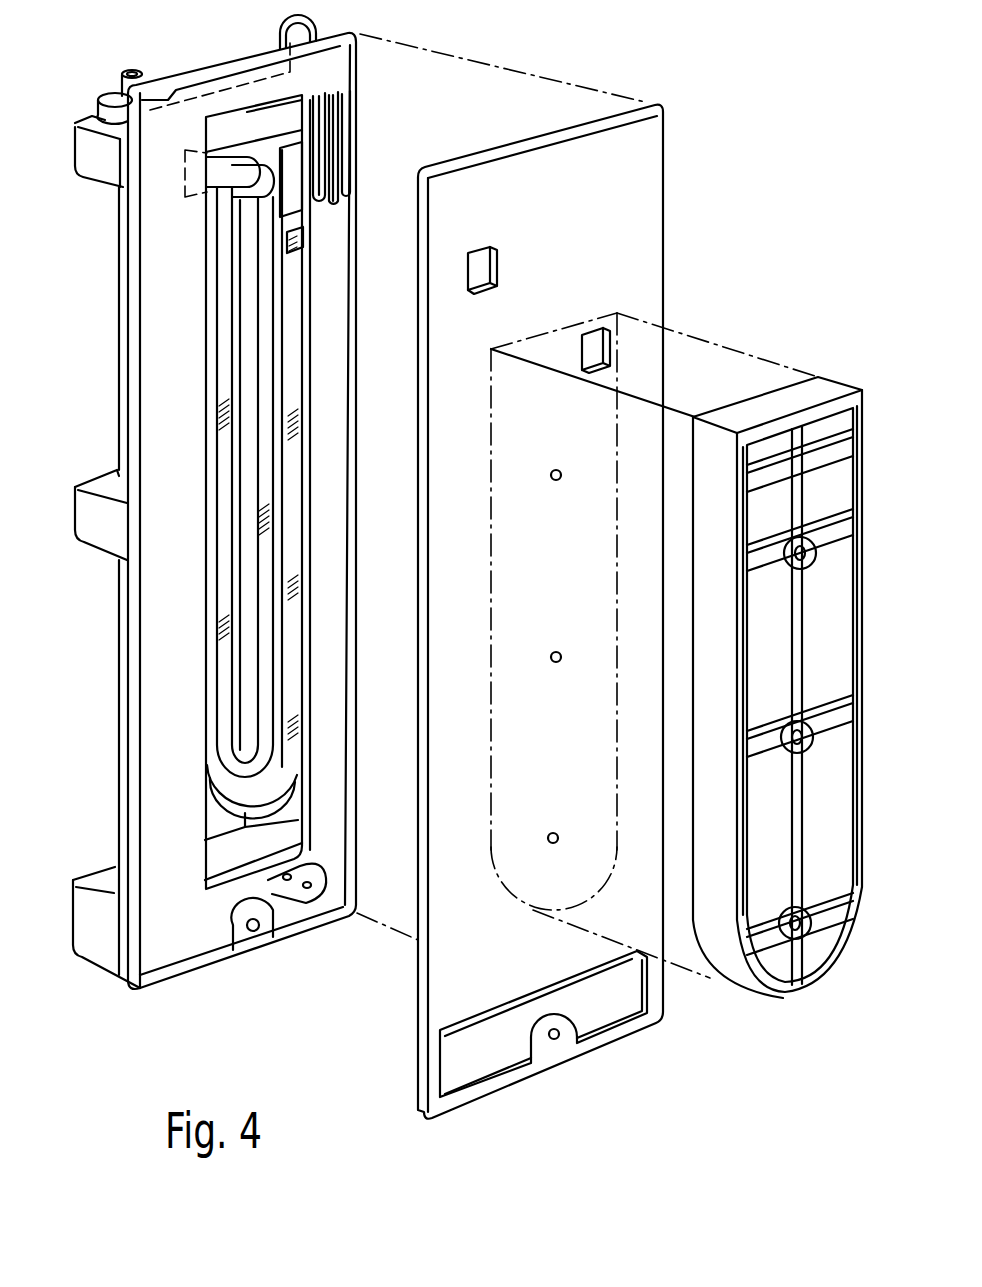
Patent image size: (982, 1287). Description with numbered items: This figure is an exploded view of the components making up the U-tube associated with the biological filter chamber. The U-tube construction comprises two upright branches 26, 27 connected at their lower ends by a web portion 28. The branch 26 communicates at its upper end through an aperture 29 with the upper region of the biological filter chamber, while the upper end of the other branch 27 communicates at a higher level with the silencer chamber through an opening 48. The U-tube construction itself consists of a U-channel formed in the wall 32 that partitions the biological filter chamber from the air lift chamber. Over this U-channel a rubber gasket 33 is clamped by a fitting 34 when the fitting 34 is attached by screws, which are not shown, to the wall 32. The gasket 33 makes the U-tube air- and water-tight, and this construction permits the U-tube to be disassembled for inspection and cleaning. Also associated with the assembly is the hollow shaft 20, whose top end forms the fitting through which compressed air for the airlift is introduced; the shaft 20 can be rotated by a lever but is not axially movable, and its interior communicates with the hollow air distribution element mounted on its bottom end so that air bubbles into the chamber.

The hollow shaft 20 is at (118, 800).
The upright branch 26 is at (211, 592).
The upright branch 27 is at (297, 517).
The web portion 28 is at (262, 793).
The aperture 29 is at (302, 237).
The wall 32 is at (147, 690).
The rubber gasket 33 is at (642, 245).
The fitting 34 is at (853, 508).
The opening 48 is at (487, 262).